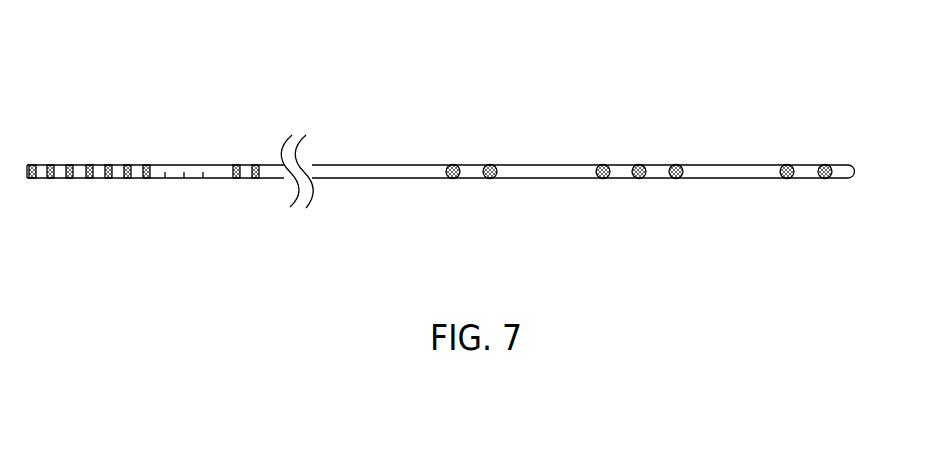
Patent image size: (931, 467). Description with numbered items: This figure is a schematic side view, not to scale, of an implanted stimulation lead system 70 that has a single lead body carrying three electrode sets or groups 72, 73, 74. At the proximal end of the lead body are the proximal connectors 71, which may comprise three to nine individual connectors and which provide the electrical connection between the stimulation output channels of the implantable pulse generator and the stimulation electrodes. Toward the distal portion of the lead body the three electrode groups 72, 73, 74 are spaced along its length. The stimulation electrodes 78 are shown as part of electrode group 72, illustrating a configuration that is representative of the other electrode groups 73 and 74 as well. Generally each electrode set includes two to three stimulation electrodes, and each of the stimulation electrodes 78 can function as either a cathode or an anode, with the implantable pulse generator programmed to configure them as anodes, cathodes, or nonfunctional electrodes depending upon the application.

The implanted stimulation lead system 70 is at (124, 37).
The proximal connectors 71 is at (147, 164).
The electrode group 72 is at (472, 156).
The electrode group 73 is at (643, 156).
The electrode group 74 is at (808, 156).
The stimulation electrodes 78 is at (490, 178).